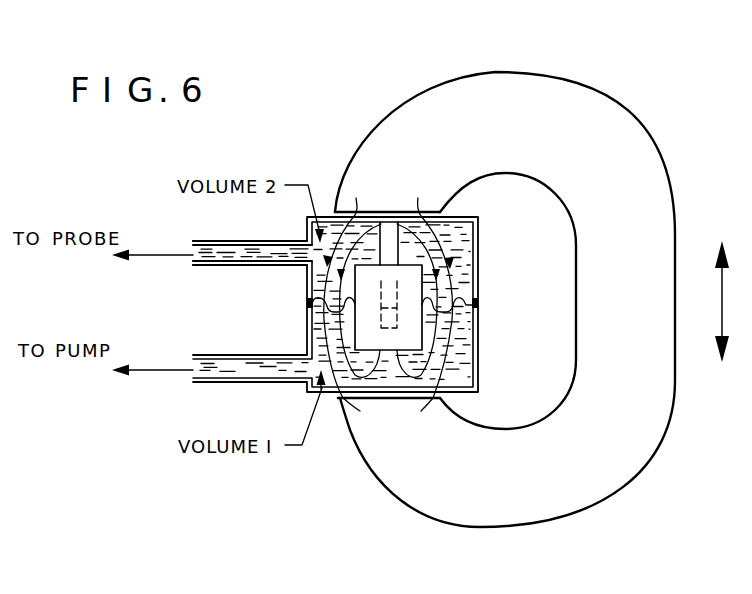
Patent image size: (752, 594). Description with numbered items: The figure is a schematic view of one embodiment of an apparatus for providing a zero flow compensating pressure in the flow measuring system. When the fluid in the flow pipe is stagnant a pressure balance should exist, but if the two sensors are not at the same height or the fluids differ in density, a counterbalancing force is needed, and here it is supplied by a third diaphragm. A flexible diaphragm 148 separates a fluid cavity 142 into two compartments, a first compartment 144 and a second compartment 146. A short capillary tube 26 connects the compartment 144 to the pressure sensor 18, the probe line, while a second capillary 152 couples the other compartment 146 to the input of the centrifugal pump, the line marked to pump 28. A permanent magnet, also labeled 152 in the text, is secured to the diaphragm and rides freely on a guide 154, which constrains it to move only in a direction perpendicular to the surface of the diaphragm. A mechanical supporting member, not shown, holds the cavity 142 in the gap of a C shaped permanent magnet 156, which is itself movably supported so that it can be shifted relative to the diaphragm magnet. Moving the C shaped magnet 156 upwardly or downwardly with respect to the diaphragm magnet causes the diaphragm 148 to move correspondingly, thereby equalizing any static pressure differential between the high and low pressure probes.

The pressure sensor 18 is at (152, 244).
The short capillary tube 26 is at (252, 239).
The line to pump 28 is at (152, 358).
The fluid cavity 142 is at (478, 276).
The compartment 144 is at (464, 243).
The compartment 146 is at (463, 356).
The flexible diaphragm 148 is at (446, 323).
The second capillary 152 is at (470, 409).
The guide 154 is at (373, 230).
The C shaped permanent magnet 156 is at (584, 110).